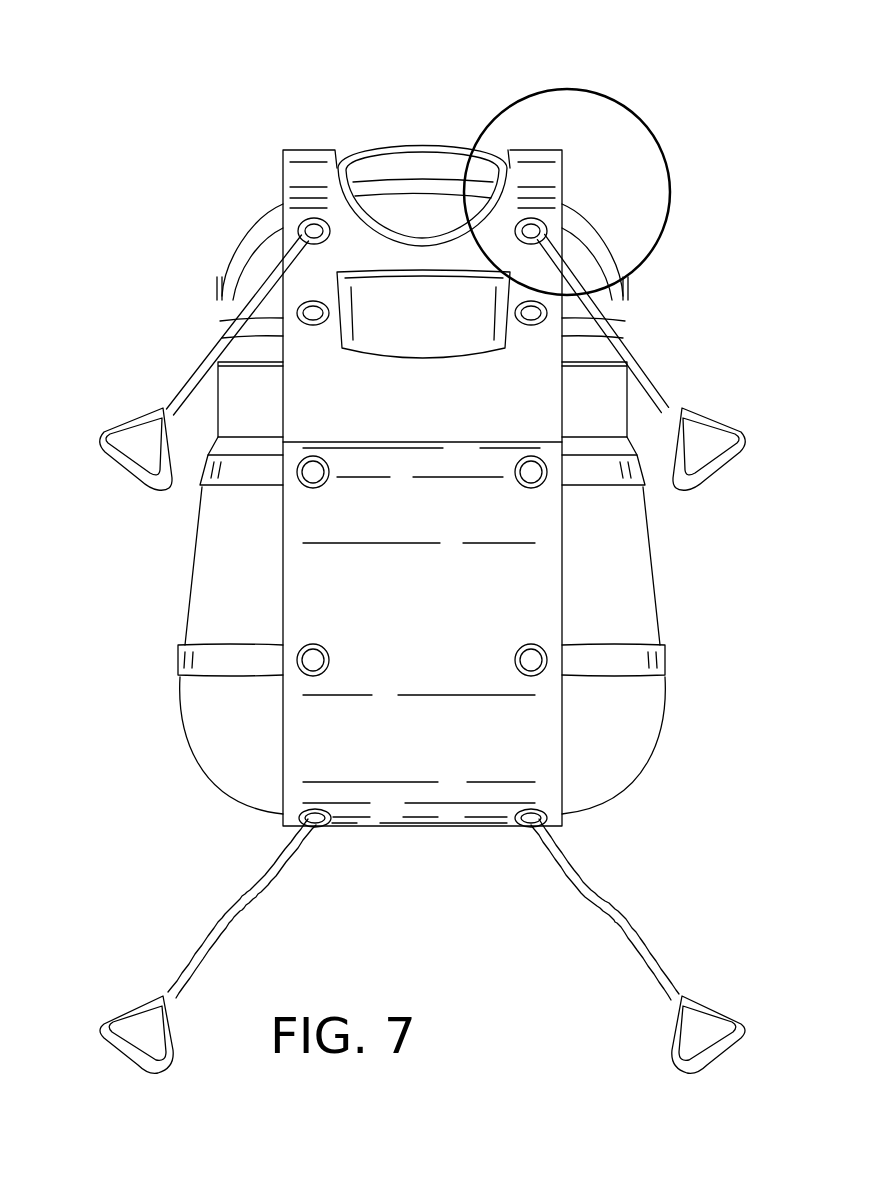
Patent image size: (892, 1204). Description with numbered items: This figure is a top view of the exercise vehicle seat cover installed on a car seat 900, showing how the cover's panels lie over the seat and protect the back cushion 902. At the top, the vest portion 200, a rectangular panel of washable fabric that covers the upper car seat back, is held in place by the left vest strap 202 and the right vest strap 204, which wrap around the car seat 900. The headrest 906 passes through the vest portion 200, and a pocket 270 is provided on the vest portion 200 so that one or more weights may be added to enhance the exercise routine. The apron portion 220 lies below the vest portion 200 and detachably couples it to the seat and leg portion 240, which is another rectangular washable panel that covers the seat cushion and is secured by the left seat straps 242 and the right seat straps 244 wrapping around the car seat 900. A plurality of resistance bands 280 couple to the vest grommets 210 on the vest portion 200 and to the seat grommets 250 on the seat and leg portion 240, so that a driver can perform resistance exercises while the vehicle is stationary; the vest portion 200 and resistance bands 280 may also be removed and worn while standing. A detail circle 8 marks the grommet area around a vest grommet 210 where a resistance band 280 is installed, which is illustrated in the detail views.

The detail circle for FIG. 8 is at (653, 130).
The vest portion 200 is at (372, 247).
The left vest strap 202 is at (627, 311).
The right vest strap 204 is at (216, 311).
The vest grommets 210 is at (535, 232).
The apron portion 220 is at (490, 421).
The seat and leg portion 240 is at (455, 620).
The left seat straps 242 is at (610, 655).
The right seat straps 244 is at (245, 655).
The seat grommets 250 is at (315, 676).
The pocket 270 is at (372, 288).
The resistance bands 280 is at (655, 388).
The car seat 900 is at (185, 757).
The back cushion 902 is at (253, 270).
The headrest 906 is at (407, 147).